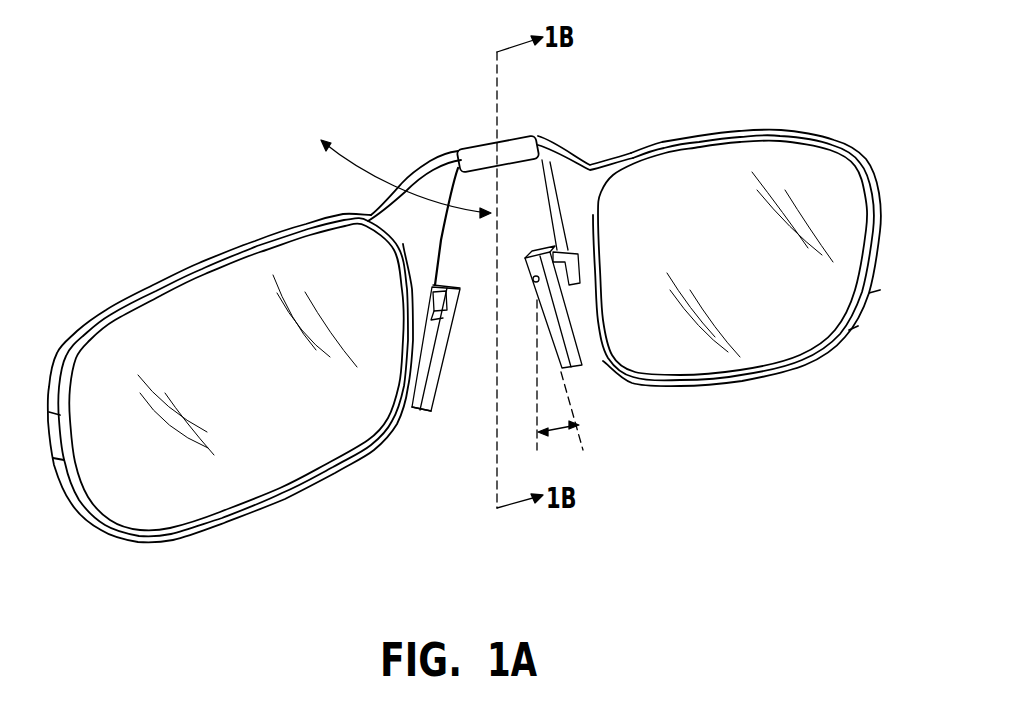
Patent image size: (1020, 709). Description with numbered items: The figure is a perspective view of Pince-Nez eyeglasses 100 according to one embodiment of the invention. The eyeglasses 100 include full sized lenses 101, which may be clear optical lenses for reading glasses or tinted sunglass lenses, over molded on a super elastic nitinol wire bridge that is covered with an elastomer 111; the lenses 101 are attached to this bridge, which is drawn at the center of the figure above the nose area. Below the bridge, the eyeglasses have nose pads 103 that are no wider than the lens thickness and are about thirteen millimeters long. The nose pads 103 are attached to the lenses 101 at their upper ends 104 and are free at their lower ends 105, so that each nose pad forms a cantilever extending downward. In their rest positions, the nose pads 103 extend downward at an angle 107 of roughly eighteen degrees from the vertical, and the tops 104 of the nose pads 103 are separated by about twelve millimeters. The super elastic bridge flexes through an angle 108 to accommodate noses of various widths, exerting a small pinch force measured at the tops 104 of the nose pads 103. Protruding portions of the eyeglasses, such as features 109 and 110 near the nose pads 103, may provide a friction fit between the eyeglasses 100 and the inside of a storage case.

The eyeglasses 100 is at (187, 107).
The lenses 101 is at (208, 487).
The nose pads 103 is at (548, 323).
The upper ends of nose pads 104 is at (452, 283).
The lower ends of nose pads 105 is at (414, 408).
The angle 107 is at (565, 430).
The angle 108 is at (350, 165).
The protruding feature 109 is at (567, 268).
The protruding feature 110 is at (436, 296).
The elastomer 111 is at (487, 146).